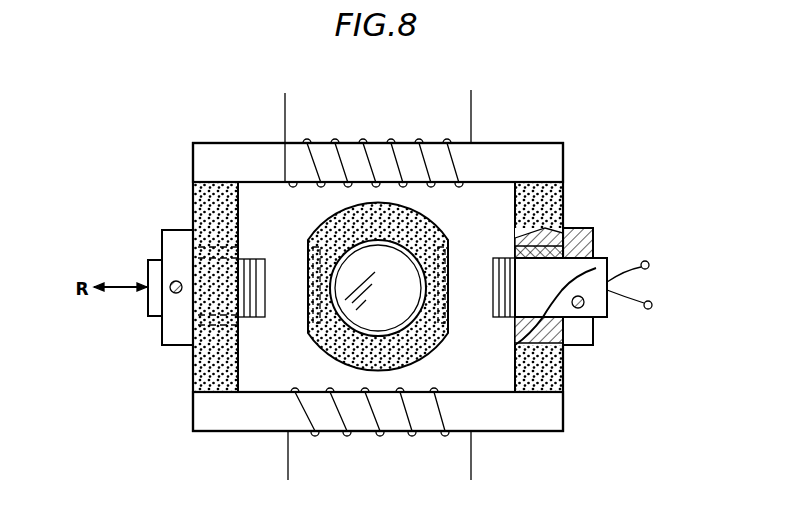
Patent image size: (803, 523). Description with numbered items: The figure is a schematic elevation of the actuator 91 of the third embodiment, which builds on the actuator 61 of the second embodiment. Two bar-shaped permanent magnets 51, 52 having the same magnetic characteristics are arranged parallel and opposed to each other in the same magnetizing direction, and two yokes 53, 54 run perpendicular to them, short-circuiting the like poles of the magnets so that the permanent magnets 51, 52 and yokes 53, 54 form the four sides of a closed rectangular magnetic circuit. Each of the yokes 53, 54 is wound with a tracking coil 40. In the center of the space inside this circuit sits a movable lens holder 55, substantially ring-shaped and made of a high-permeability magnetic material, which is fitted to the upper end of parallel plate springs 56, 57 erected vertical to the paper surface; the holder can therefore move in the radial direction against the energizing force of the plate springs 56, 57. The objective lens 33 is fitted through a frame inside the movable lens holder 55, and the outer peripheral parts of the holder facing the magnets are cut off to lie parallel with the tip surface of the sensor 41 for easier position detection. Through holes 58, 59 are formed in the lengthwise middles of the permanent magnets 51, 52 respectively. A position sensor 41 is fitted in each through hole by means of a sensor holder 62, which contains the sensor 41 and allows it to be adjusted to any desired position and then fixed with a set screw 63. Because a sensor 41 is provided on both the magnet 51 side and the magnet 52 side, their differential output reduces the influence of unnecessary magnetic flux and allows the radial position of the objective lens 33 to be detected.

The actuator 91 is at (186, 160).
The yoke 53 is at (500, 152).
The yoke 54 is at (523, 420).
The permanent magnet 51 is at (202, 222).
The permanent magnet 52 is at (560, 207).
The tracking coil 40 is at (307, 142).
The movable lens holder 55 is at (304, 328).
The objective lens 33 is at (358, 315).
The plate spring 56 is at (306, 266).
The plate spring 57 is at (445, 270).
The through hole 58 is at (197, 322).
The through hole 59 is at (515, 320).
The actuator 61 is at (170, 328).
The position sensor 41 is at (153, 302).
The sensor holder 62 is at (593, 343).
The set screw 63 is at (170, 282).